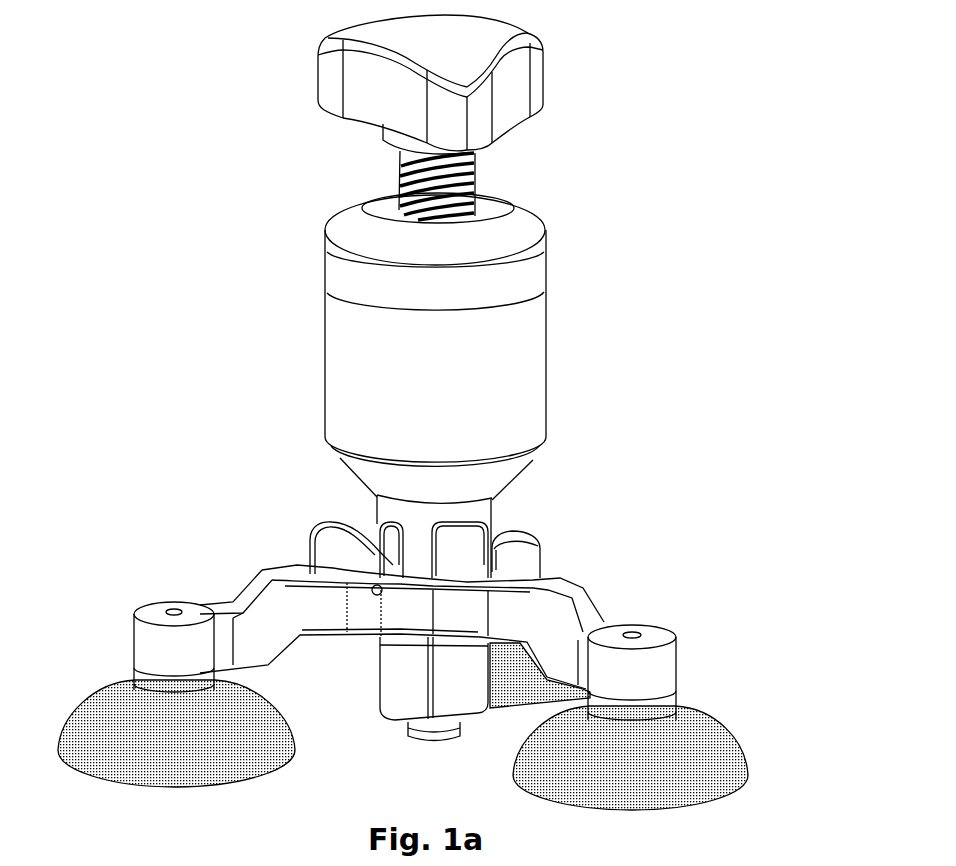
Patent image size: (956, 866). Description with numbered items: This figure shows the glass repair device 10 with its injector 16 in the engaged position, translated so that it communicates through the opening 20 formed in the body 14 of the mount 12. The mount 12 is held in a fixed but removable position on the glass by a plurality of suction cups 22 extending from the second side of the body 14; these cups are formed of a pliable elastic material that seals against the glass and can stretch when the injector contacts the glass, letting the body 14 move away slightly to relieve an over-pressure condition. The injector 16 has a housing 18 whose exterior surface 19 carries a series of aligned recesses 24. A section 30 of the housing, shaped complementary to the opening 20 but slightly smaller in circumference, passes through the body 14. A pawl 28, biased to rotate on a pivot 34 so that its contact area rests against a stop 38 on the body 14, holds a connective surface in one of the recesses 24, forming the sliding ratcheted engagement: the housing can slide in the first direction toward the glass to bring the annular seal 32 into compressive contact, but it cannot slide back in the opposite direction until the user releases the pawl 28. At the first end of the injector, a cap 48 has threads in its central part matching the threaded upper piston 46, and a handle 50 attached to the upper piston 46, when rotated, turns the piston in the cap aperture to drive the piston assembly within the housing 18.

The glass repair device 10 is at (225, 233).
The mount 12 is at (575, 594).
The body 14 is at (546, 578).
The injector 16 is at (547, 315).
The housing 18 is at (342, 434).
The exterior surface 19 is at (419, 385).
The opening 20 is at (513, 533).
The suction cups 22 is at (108, 699).
The recesses 24 is at (388, 655).
The pawl 28 is at (322, 540).
The section 30 is at (489, 506).
The annular seal 32 is at (407, 735).
The pivot 34 is at (371, 592).
The stop 38 is at (341, 572).
The upper piston 46 is at (478, 180).
The cap 48 is at (340, 240).
The handle 50 is at (543, 78).